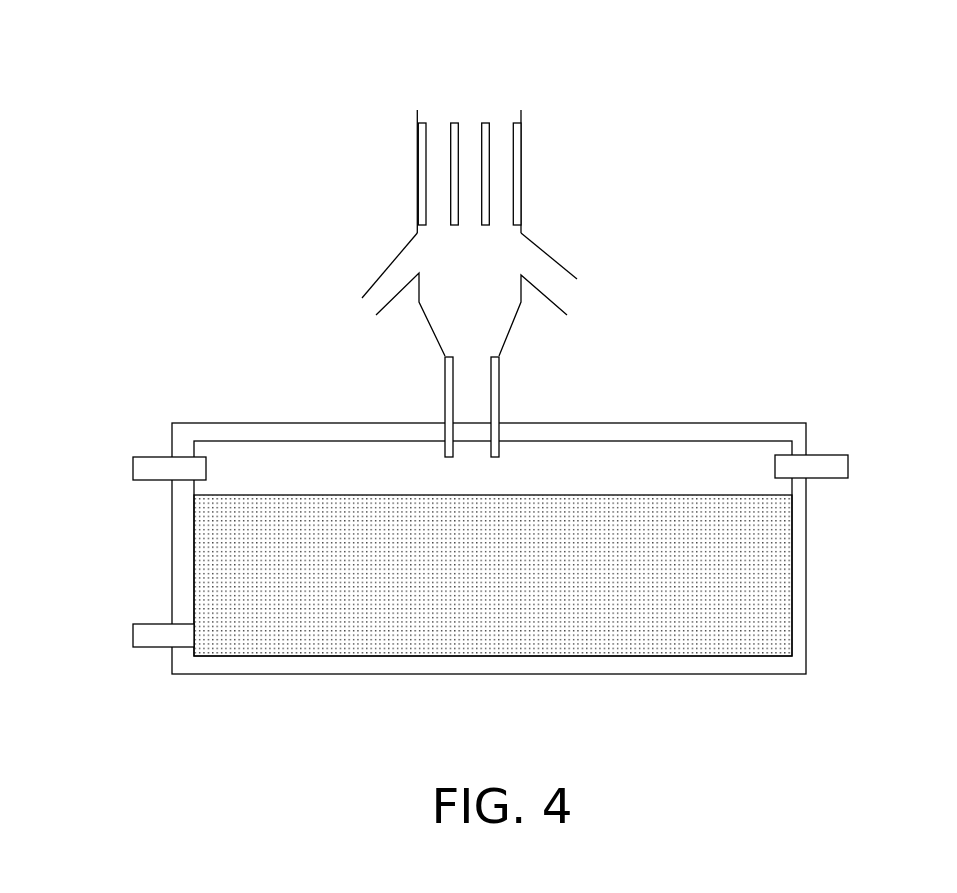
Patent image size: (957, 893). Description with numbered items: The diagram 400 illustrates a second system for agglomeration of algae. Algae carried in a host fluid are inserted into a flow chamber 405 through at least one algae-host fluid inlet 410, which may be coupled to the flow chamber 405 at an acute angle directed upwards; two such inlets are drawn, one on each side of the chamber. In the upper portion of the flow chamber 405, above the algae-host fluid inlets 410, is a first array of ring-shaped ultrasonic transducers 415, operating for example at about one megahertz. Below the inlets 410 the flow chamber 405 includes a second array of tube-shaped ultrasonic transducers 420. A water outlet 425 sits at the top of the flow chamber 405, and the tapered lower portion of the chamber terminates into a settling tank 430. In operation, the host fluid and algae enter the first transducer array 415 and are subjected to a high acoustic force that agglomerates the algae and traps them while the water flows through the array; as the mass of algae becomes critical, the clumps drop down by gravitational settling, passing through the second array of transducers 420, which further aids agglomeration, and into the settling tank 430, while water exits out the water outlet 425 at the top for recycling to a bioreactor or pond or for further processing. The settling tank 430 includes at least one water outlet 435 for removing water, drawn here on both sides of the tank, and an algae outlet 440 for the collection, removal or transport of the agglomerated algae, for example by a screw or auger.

The diagram 400 is at (245, 730).
The flow chamber 405 is at (401, 156).
The algae-host fluid inlet 410 is at (362, 262).
The first array of ring-shaped ultrasonic transducers 415 is at (496, 121).
The second array of tube-shaped ultrasonic transducers 420 is at (510, 394).
The water outlet 425 is at (465, 69).
The settling tank 430 is at (825, 614).
The water outlet 435 is at (123, 460).
The algae outlet 440 is at (123, 642).